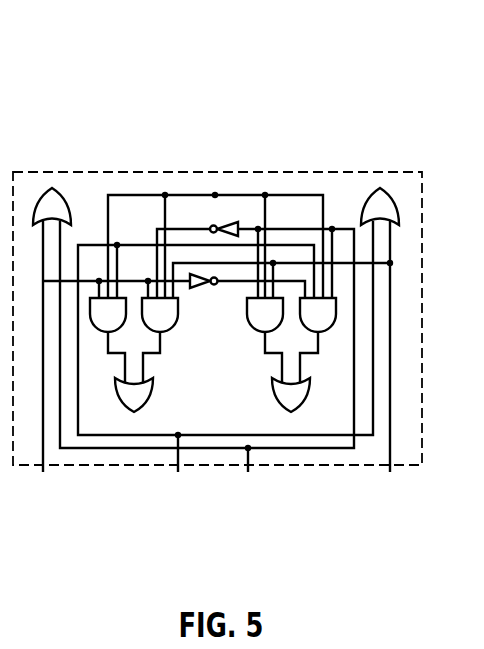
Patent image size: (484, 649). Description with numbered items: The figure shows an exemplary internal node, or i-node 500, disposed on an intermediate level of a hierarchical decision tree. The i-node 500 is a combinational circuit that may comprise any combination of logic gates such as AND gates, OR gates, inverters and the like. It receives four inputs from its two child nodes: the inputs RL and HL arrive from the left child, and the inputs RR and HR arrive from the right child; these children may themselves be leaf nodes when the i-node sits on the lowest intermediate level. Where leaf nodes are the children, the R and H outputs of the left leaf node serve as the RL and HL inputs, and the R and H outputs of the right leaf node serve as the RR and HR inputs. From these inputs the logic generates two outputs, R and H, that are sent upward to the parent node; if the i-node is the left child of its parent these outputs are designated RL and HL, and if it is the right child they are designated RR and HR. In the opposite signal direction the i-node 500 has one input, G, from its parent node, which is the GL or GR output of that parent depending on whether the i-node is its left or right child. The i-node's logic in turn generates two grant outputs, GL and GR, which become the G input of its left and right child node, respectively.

The internal node 500 is at (342, 83).
The R output R is at (52, 188).
The G input G is at (215, 195).
The H output H is at (380, 188).
The RL input RL is at (43, 472).
The GL grant output GL is at (134, 412).
The HL input HL is at (178, 472).
The RR input RR is at (248, 472).
The GR grant output GR is at (291, 412).
The HR input HR is at (390, 472).